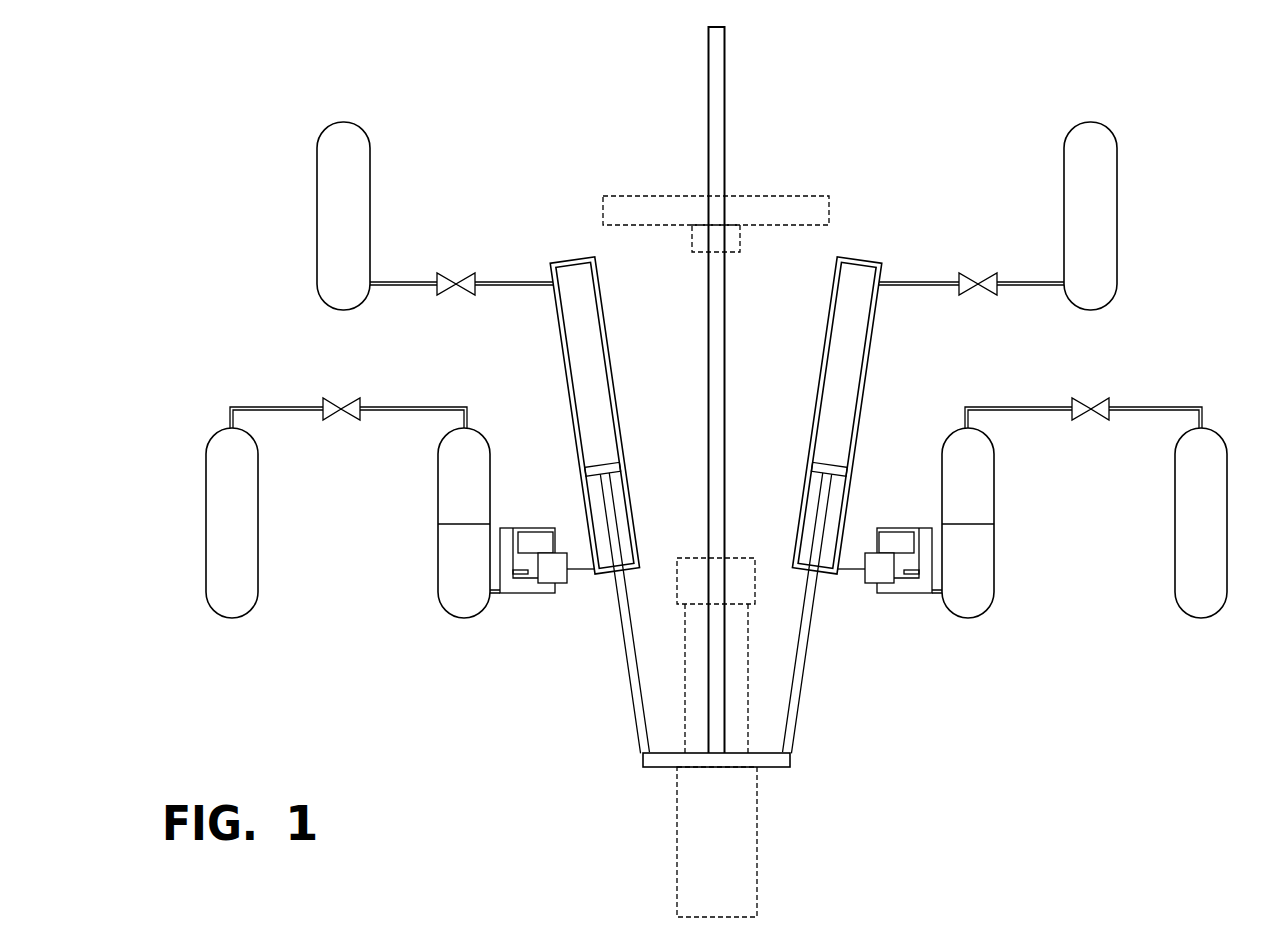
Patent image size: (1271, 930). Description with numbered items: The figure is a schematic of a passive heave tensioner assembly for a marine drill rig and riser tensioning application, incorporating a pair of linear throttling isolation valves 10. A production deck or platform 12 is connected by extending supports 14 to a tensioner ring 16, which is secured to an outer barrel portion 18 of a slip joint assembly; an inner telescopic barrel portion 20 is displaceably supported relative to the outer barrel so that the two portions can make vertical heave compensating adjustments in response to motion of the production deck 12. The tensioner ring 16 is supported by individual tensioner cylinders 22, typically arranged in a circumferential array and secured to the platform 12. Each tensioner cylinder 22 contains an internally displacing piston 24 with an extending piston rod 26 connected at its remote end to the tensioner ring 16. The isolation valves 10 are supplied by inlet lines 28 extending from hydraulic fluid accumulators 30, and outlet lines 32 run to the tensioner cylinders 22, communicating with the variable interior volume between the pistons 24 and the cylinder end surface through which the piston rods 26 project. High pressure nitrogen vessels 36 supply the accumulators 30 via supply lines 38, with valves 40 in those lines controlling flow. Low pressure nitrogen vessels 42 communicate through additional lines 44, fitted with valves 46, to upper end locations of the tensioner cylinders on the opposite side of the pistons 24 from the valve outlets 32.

The isolation valve 10 is at (531, 508).
The production deck 12 is at (788, 197).
The extending supports 14 is at (726, 428).
The tensioner ring 16 is at (665, 760).
The outer barrel portion 18 is at (677, 842).
The inner telescopic barrel portion 20 is at (690, 558).
The tensioner cylinders 22 is at (605, 313).
The pistons 24 is at (601, 457).
The piston rods 26 is at (626, 663).
The inlet lines 28 is at (524, 597).
The hydraulic fluid accumulators 30 is at (438, 577).
The outlet lines 32 is at (583, 584).
The high pressure vessels 36 is at (206, 597).
The supply lines 38 is at (290, 407).
The valves 40 is at (341, 421).
The low pressure vessels 42 is at (317, 203).
The additional lines 44 is at (515, 282).
The valves 46 is at (453, 295).